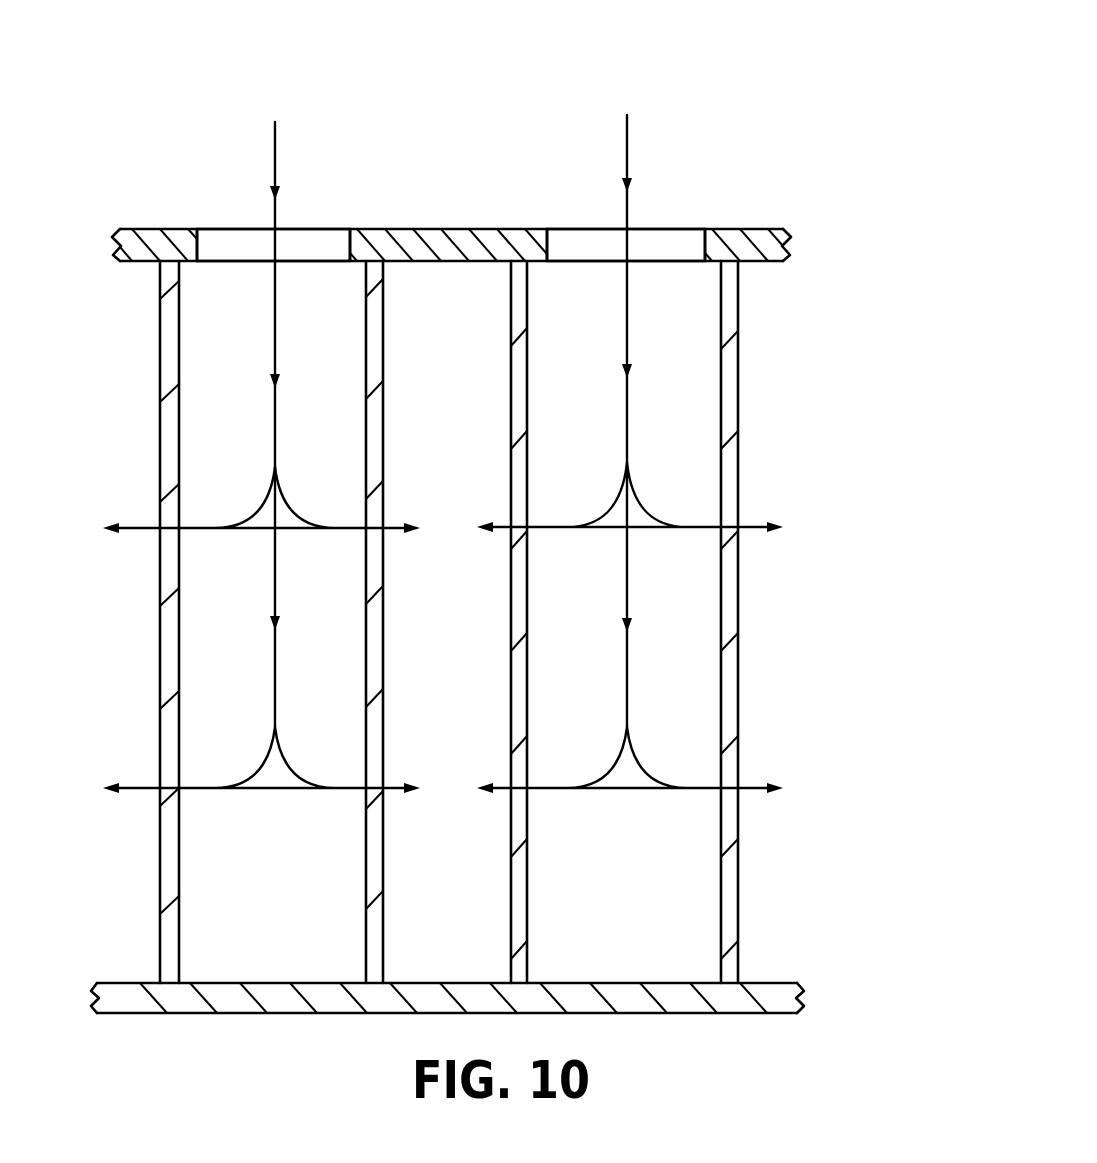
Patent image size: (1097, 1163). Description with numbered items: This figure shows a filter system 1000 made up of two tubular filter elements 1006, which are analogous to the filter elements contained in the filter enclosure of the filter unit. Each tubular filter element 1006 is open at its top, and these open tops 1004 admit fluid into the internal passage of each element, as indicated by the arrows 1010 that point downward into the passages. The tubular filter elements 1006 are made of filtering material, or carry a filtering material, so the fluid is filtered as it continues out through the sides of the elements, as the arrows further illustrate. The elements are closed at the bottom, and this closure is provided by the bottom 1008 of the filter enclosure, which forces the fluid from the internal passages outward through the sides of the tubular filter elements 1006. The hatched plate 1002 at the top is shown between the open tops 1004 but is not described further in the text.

The filter system 1000 is at (650, 59).
The top plate 1002 is at (430, 228).
The open tops 1004 is at (215, 228).
The tubular filter elements 1006 is at (160, 423).
The bottom of the filter enclosure 1008 is at (122, 983).
The arrows 1010 is at (276, 152).